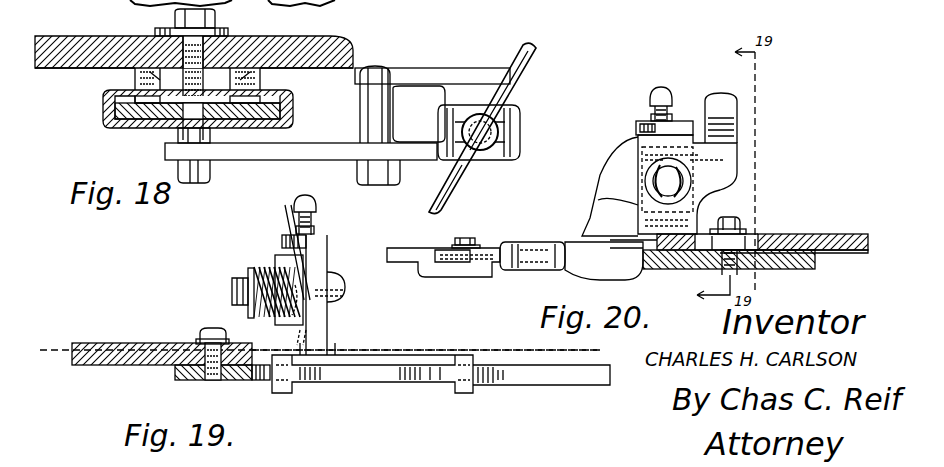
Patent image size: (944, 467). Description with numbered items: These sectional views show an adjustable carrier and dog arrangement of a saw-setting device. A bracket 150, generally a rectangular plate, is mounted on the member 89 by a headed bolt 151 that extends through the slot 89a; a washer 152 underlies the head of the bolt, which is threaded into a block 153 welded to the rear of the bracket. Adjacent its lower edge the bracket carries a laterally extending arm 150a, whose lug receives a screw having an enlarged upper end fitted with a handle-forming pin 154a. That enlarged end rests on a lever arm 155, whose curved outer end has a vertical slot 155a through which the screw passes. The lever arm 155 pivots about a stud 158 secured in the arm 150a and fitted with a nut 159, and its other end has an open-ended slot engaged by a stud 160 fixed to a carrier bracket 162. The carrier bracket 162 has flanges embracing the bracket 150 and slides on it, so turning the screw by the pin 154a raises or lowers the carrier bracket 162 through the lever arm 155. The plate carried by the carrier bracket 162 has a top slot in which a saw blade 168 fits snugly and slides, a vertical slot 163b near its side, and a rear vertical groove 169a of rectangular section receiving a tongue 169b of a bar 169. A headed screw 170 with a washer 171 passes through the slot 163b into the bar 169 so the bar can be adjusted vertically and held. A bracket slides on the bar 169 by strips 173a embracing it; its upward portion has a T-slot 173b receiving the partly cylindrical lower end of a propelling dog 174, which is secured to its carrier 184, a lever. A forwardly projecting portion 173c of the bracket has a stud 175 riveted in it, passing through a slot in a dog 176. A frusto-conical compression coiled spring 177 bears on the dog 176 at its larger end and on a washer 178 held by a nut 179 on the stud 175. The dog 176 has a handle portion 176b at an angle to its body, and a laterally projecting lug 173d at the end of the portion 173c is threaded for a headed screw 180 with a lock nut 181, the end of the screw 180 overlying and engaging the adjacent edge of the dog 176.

In FIG. 18, the member 89 is at (350, 41).
In FIG. 18, the slot 89a is at (130, 69).
In FIG. 18, the headed bolt 151 is at (175, 19).
In FIG. 18, the washer 152 is at (240, 26).
In FIG. 18, the bracket 150 is at (257, 88).
In FIG. 18, the laterally extending arm 150a is at (408, 70).
In FIG. 18, the carrier bracket 162 is at (104, 100).
In FIG. 18, the block 153 is at (112, 119).
In FIG. 18, the stud 160 is at (177, 136).
In FIG. 18, the lever arm 155 is at (322, 150).
In FIG. 18, the slot 155a is at (503, 127).
In FIG. 18, the stud 158 is at (392, 122).
In FIG. 18, the nut 159 is at (396, 173).
In FIG. 18, the handle-forming pin 154a is at (530, 53).
In FIG. 19, the bar 169 is at (493, 382).
In FIG. 19, the vertical groove 169a is at (185, 345).
In FIG. 19, the tongue or rib 169b is at (176, 372).
In FIG. 19, the headed screw 170 is at (226, 336).
In FIG. 20, the headed screw 170 is at (742, 220).
In FIG. 19, the washer 171 is at (214, 331).
In FIG. 20, the washer 171 is at (748, 231).
In FIG. 19, the saw blade 168 is at (518, 350).
In FIG. 20, the saw blade 168 is at (812, 237).
In FIG. 19, the strips 173a is at (462, 392).
In FIG. 20, the T-slot 173b is at (528, 250).
In FIG. 19, the forwardly projecting portion 173c is at (330, 273).
In FIG. 19, the laterally projecting lug 173d is at (281, 238).
In FIG. 20, the laterally projecting lug 173d is at (636, 128).
In FIG. 20, the propelling dog 174 is at (488, 246).
In FIG. 19, the stud 175 is at (326, 306).
In FIG. 19, the dog 176 is at (310, 326).
In FIG. 20, the dog 176 is at (722, 153).
In FIG. 19, the handle portion 176b is at (287, 206).
In FIG. 20, the handle portion 176b is at (718, 94).
In FIG. 19, the compression coiled spring 177 is at (268, 265).
In FIG. 19, the washer 178 is at (248, 272).
In FIG. 19, the nut 179 is at (232, 281).
In FIG. 19, the headed screw 180 is at (317, 203).
In FIG. 20, the headed screw 180 is at (654, 88).
In FIG. 19, the lock nut 181 is at (315, 224).
In FIG. 20, the lock nut 181 is at (648, 115).
In FIG. 20, the carrier 184 is at (418, 277).
In FIG. 20, the vertical slot 163b is at (772, 271).